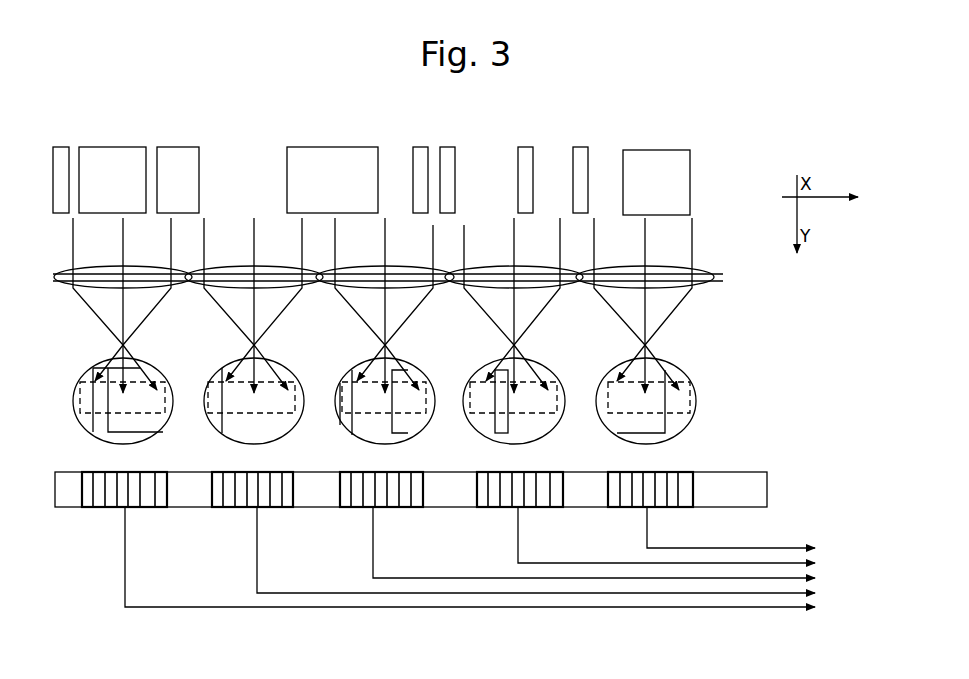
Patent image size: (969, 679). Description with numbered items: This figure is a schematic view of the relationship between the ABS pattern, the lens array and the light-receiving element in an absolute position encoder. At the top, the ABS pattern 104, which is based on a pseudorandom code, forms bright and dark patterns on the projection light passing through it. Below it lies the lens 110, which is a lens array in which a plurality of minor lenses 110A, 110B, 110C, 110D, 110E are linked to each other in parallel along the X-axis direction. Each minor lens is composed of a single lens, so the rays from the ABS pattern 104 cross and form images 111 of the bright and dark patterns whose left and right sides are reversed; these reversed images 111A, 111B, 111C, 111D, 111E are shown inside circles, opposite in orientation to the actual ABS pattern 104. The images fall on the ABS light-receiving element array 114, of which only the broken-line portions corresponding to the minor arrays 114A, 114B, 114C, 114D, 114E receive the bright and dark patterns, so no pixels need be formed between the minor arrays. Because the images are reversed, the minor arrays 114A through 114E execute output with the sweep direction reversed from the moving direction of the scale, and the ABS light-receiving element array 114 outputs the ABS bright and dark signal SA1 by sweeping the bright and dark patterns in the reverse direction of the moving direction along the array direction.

The ABS pattern 104 is at (682, 171).
The lens 110 is at (418, 293).
The minor lens 110A is at (172, 288).
The minor lens 110B is at (303, 288).
The minor lens 110C is at (434, 288).
The minor lens 110D is at (563, 288).
The minor lens 110E is at (692, 288).
The images of bright and dark patterns 111 is at (421, 408).
The image of bright and dark pattern 111A is at (148, 425).
The image of bright and dark pattern 111B is at (279, 425).
The image of bright and dark pattern 111C is at (408, 423).
The image of bright and dark pattern 111D is at (540, 426).
The image of bright and dark pattern 111E is at (672, 425).
The ABS light-receiving element array 114 is at (435, 528).
The minor array 114A is at (143, 495).
The minor array 114B is at (273, 495).
The minor array 114C is at (392, 498).
The minor array 114D is at (530, 498).
The minor array 114E is at (680, 495).
The ABS bright and dark signal SA1 is at (773, 607).